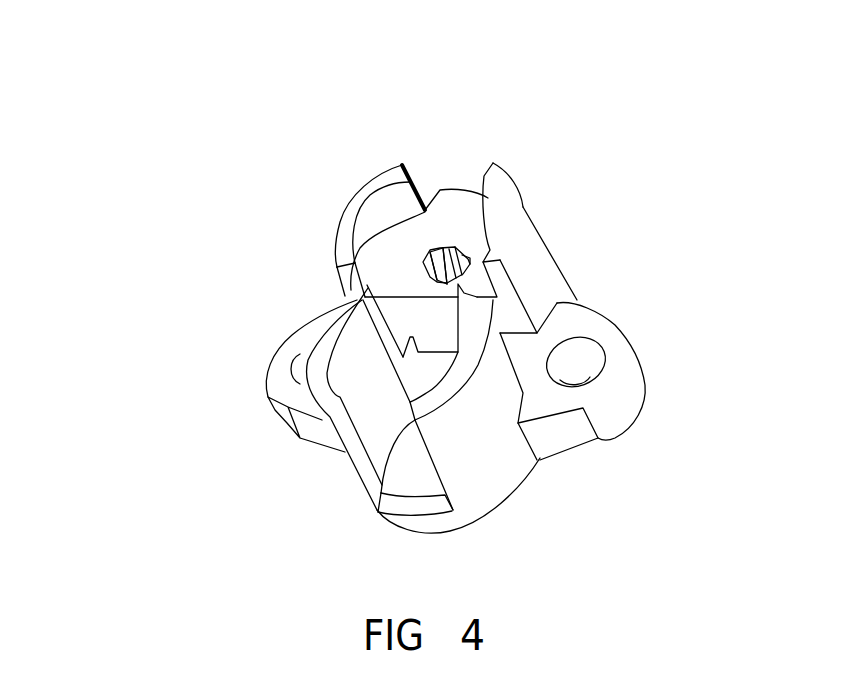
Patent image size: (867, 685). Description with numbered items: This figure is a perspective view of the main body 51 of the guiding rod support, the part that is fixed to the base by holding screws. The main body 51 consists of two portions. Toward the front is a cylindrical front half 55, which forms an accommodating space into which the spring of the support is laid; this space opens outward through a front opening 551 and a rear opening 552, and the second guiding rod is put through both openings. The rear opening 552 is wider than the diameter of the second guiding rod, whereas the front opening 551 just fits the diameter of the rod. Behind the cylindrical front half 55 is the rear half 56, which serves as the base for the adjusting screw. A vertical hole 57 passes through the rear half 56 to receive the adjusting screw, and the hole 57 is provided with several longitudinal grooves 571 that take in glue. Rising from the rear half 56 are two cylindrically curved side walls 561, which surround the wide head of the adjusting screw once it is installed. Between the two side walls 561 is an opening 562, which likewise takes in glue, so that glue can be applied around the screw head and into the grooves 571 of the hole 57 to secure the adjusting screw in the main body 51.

The main body 51 is at (550, 330).
The cylindrical front half 55 is at (357, 371).
The front opening 551 is at (350, 465).
The rear opening 552 is at (397, 313).
The rear half 56 is at (462, 217).
The cylindrically curved side walls 561 is at (380, 173).
The opening 562 is at (430, 165).
The vertical hole 57 is at (440, 253).
The longitudinal grooves 571 is at (423, 262).